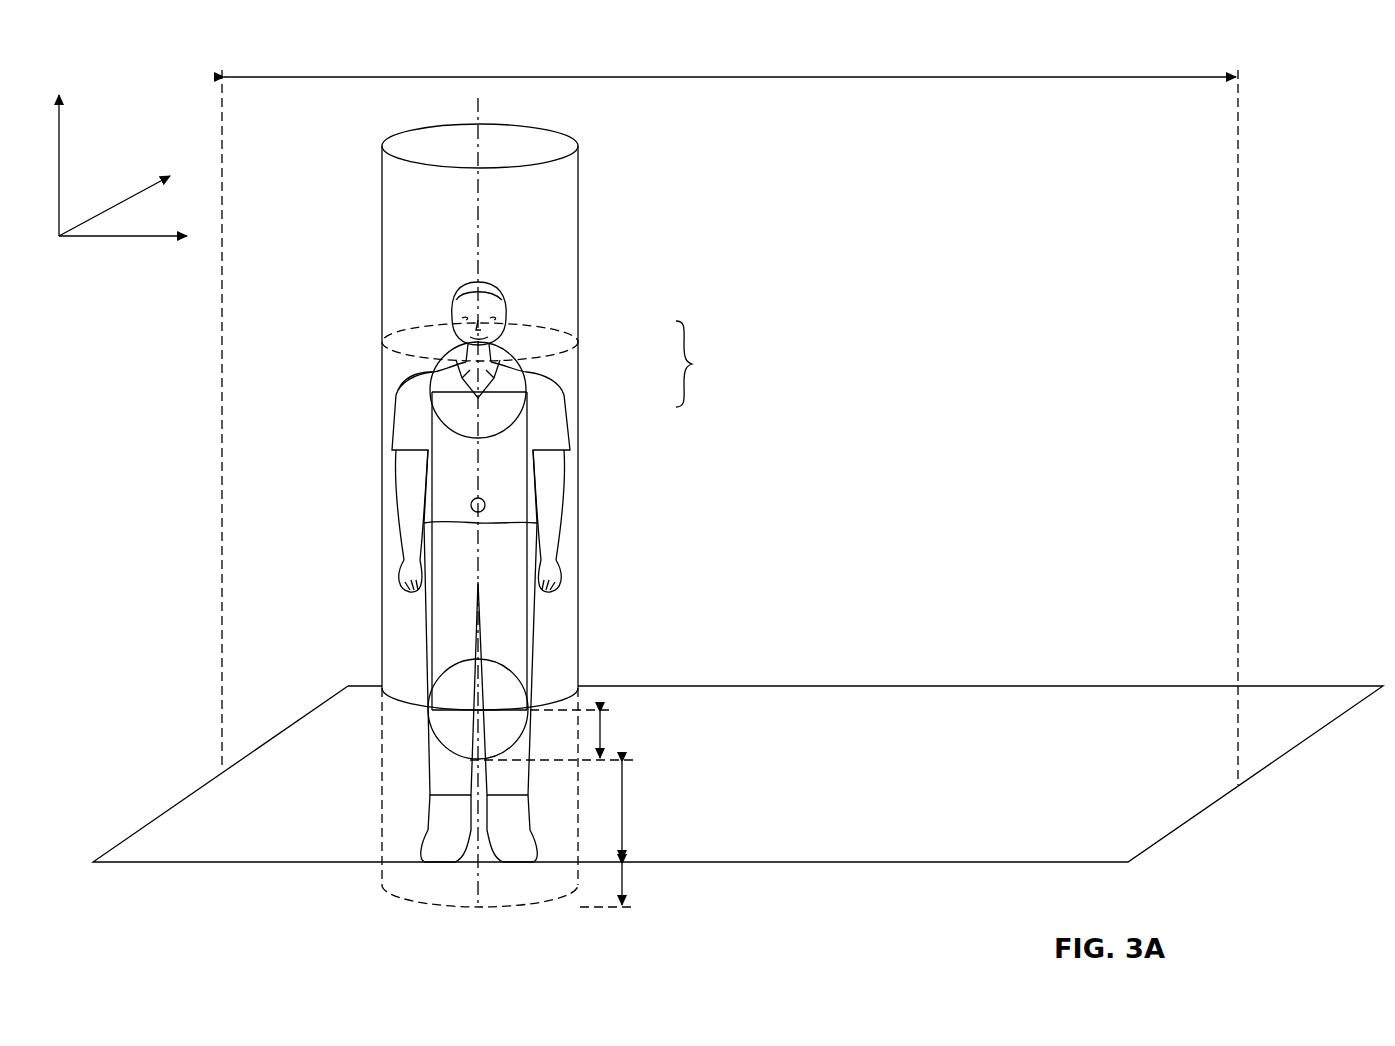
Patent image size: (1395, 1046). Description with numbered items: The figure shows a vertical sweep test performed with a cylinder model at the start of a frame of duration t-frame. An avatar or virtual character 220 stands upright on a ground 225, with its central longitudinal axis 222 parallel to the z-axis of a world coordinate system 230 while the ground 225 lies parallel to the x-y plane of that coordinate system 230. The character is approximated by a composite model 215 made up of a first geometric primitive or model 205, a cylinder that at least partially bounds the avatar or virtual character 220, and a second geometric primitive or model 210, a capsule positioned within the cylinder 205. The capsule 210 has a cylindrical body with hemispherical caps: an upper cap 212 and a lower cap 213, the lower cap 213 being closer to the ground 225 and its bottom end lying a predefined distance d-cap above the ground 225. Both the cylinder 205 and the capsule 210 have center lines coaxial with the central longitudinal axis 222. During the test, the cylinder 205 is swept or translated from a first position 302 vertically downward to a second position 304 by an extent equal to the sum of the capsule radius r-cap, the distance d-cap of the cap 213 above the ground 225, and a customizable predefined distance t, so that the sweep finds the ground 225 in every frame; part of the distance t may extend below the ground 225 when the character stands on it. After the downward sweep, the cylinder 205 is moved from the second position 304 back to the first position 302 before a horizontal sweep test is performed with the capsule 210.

The first geometric primitive or model 205 is at (578, 318).
The second geometric primitive or model 210 is at (528, 425).
The first end or cap 212 is at (425, 382).
The second end or cap 213 is at (432, 737).
The composite model 215 is at (713, 364).
The avatar or virtual character 220 is at (553, 515).
The central longitudinal axis 222 is at (477, 110).
The ground 225 is at (178, 847).
The world coordinate system 230 is at (103, 80).
The first position 302 is at (367, 250).
The second position 304 is at (375, 828).